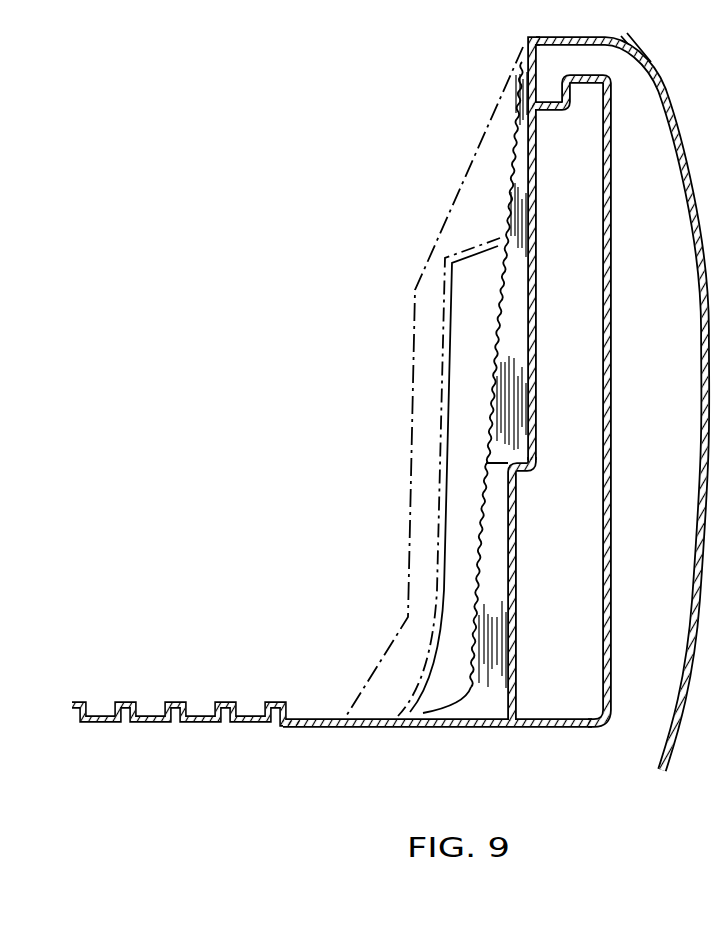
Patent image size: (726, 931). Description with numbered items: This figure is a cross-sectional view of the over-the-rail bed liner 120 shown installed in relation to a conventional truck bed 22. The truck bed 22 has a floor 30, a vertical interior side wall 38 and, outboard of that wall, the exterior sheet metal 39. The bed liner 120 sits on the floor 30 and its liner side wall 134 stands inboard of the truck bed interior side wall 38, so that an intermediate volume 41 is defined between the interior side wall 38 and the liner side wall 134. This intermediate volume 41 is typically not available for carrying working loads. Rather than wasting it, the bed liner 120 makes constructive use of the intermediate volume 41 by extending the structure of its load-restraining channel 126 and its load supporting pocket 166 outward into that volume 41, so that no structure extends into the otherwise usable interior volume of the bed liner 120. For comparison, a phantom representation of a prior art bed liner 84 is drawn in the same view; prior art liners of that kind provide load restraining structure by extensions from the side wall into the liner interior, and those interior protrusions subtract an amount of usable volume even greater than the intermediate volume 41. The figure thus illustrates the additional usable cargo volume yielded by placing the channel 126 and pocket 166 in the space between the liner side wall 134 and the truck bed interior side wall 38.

The truck bed 22 is at (541, 733).
The floor 30 is at (452, 729).
The interior side wall 38 is at (613, 366).
The exterior sheet metal 39 is at (700, 412).
The intermediate volume 41 is at (574, 514).
The prior art bed liner 84 is at (410, 372).
The over-the-rail bed liner 120 is at (314, 480).
The load-restraining channel 126 is at (520, 592).
The liner side wall 134 is at (547, 333).
The load supporting pocket 166 is at (542, 425).